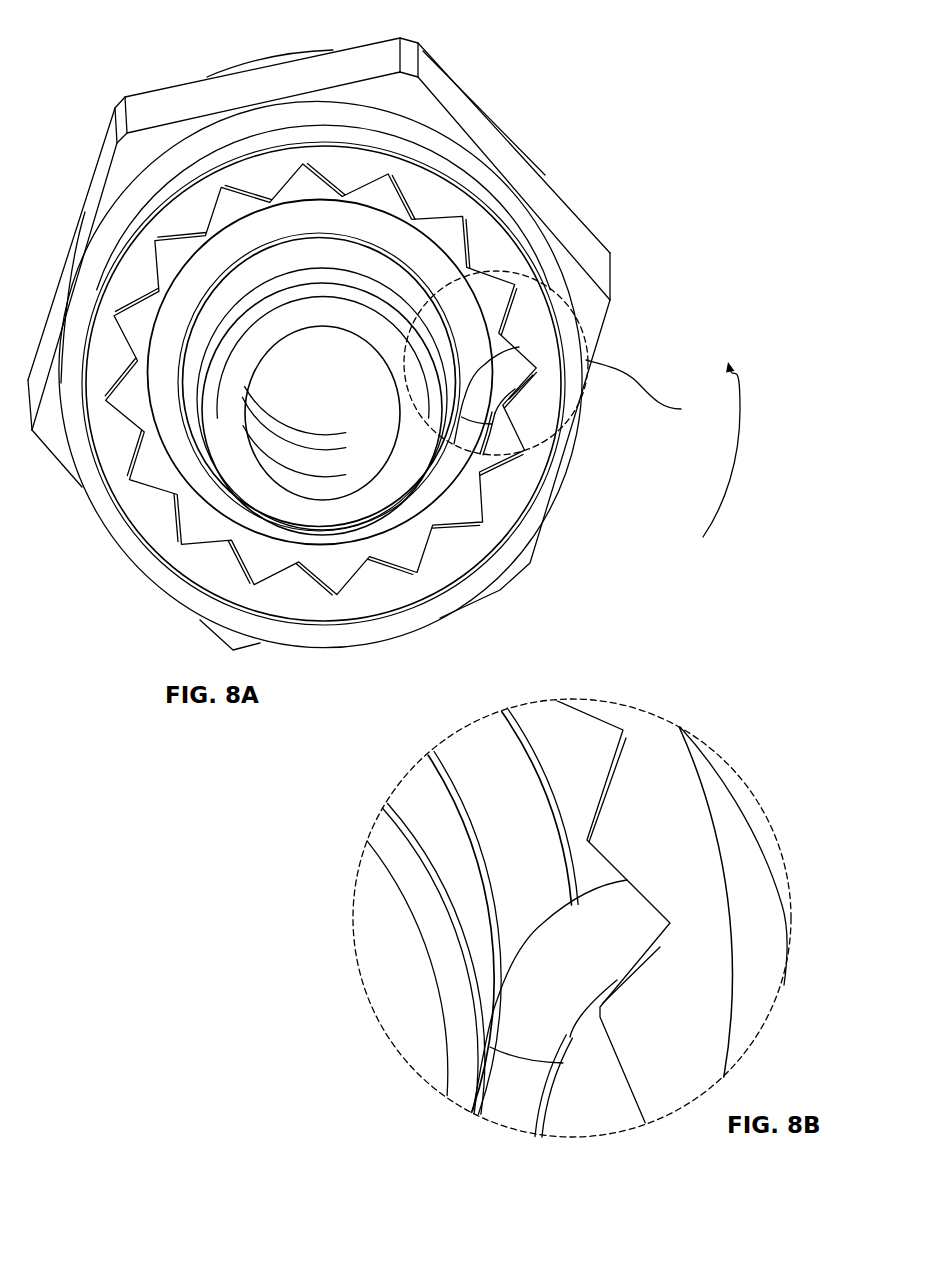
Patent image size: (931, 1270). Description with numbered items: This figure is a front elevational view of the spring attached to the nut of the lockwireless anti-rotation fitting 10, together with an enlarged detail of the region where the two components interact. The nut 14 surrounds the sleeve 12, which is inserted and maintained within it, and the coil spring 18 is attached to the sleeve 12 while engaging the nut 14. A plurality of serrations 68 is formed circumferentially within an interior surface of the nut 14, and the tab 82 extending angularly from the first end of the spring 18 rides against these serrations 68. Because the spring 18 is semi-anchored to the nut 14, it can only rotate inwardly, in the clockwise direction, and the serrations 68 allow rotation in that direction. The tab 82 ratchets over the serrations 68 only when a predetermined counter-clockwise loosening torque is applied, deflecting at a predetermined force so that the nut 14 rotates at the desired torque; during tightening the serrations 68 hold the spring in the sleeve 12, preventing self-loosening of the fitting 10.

In FIG. 8A, the lockwireless anti-rotation fitting 10 is at (113, 50).
In FIG. 8A, the sleeve 12 is at (320, 440).
In FIG. 8A, the nut 14 is at (375, 92).
In FIG. 8A, the coil spring 18 is at (420, 247).
In FIG. 8B, the coil spring 18 is at (482, 744).
In FIG. 8A, the serrations 68 is at (416, 548).
In FIG. 8B, the serrations 68 is at (672, 931).
In FIG. 8A, the tab 82 is at (518, 362).
In FIG. 8B, the tab 82 is at (597, 917).